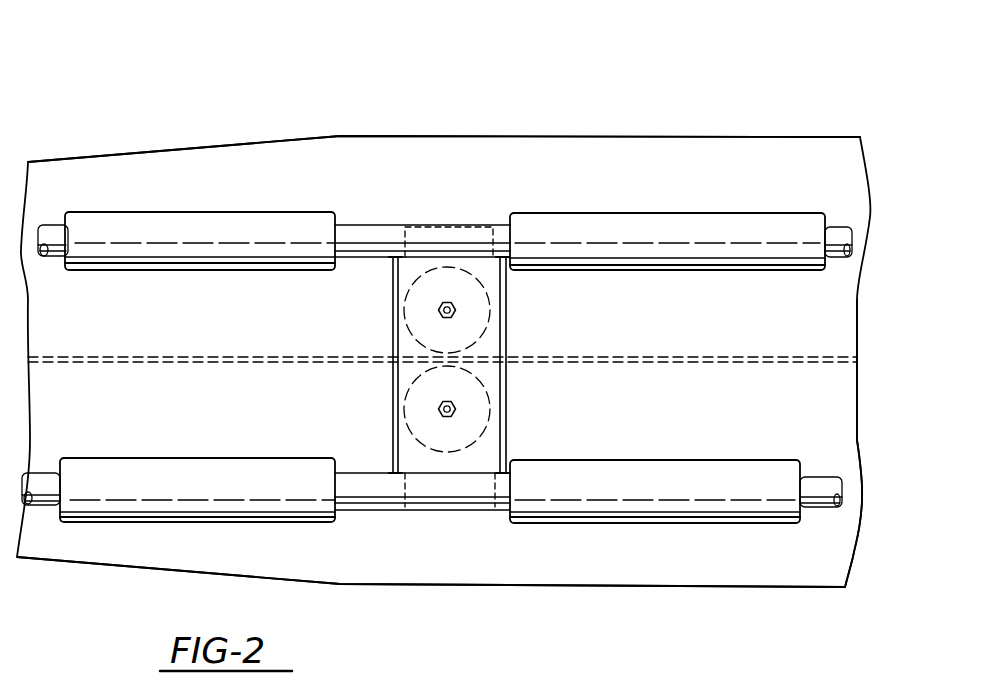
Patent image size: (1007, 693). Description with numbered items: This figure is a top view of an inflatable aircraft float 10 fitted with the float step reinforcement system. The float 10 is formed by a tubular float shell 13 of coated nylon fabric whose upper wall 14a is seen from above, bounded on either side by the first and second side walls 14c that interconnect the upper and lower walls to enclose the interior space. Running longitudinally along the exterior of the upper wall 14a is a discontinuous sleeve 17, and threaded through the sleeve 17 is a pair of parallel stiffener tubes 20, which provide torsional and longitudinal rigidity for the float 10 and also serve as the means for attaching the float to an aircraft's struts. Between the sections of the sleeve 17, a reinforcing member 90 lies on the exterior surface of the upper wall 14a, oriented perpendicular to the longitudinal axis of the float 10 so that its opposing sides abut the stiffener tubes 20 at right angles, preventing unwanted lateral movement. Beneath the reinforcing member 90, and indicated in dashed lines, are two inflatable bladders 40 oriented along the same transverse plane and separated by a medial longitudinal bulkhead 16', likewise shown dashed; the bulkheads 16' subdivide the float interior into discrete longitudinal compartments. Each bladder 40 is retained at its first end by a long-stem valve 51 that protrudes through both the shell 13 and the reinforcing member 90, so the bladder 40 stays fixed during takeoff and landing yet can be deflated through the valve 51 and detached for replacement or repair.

The float 10 is at (613, 125).
The float shell 13 is at (707, 570).
The upper wall 14a is at (218, 426).
The side walls 14c is at (383, 135).
The longitudinal bulkhead 16' is at (442, 323).
The sleeve 17 is at (177, 211).
The stiffener tubes 20 is at (465, 233).
The inflatable bladder 40 is at (490, 293).
The long-stem valve 51 is at (438, 409).
The reinforcing member 90 is at (507, 390).